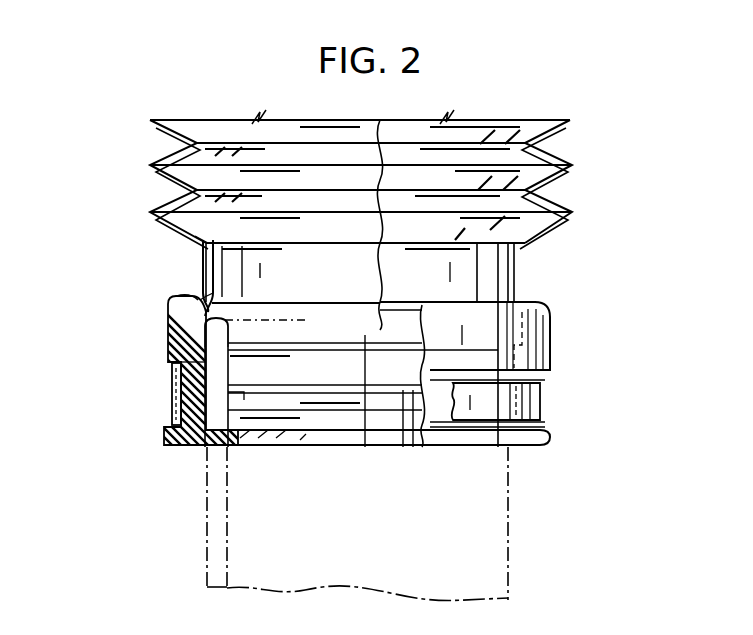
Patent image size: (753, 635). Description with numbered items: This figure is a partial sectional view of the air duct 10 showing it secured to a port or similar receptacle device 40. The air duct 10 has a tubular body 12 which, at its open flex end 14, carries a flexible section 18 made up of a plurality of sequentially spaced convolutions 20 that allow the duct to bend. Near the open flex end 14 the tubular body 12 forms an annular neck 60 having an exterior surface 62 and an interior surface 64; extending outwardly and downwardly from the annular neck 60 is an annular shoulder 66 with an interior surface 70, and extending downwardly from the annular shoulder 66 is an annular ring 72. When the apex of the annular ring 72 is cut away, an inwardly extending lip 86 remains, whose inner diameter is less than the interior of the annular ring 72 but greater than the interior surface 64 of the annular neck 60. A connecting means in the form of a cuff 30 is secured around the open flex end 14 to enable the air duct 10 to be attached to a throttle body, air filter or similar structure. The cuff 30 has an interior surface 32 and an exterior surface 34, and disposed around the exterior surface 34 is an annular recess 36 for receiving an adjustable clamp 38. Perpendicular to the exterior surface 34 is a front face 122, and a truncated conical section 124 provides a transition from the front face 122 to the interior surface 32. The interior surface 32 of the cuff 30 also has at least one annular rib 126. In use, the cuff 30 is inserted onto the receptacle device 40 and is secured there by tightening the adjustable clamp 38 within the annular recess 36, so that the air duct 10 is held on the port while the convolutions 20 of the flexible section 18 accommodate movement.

The air duct 10 is at (600, 148).
The tubular body 12 is at (518, 268).
The open flex end 14 is at (369, 422).
The flexible section 18 is at (150, 133).
The convolutions 20 is at (570, 206).
The connecting means (cuff) 30 is at (168, 340).
The interior surface 32 is at (232, 400).
The exterior surface 34 is at (553, 352).
The annular recess 36 is at (542, 379).
The adjustable clamp 38 is at (175, 404).
The receptacle device 40 is at (214, 504).
The annular neck 60 is at (205, 263).
The exterior surface 62 is at (201, 247).
The interior surface 64 is at (217, 270).
The annular shoulder 66 is at (190, 300).
The interior surface 70 is at (212, 308).
The annular ring 72 is at (186, 321).
The lip 86 is at (205, 352).
The front face 122 is at (172, 447).
The truncated conical section 124 is at (338, 442).
The annular rib 126 is at (406, 396).